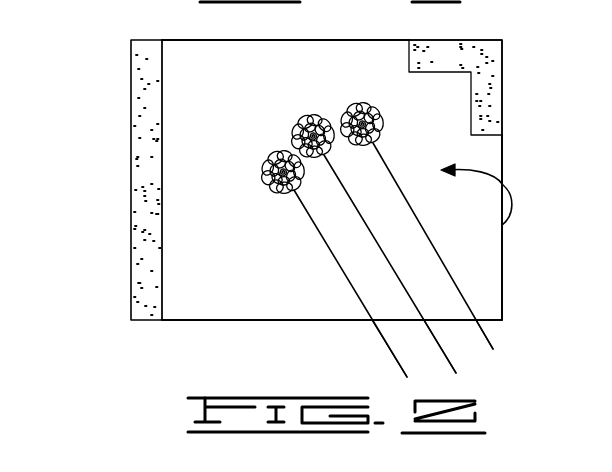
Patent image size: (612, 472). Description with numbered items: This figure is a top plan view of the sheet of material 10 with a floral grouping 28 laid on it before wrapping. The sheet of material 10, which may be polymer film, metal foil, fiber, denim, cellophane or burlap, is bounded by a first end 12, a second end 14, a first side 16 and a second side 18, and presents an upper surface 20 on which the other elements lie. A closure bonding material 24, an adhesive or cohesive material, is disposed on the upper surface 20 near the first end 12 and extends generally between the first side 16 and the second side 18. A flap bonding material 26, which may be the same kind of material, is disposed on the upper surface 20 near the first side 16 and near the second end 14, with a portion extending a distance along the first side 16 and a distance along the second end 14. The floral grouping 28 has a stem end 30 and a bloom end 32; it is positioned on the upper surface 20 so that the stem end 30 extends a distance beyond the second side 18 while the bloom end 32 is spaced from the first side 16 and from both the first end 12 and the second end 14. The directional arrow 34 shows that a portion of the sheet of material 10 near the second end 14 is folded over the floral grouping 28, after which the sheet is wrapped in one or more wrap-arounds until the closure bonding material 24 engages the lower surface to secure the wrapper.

The sheet of material 10 is at (321, 188).
The first end 12 is at (133, 167).
The second end 14 is at (503, 238).
The first side 16 is at (254, 40).
The second side 18 is at (287, 322).
The upper surface 20 is at (475, 283).
The closure bonding material 24 is at (145, 85).
The flap bonding material 26 is at (487, 60).
The floral grouping 28 is at (291, 208).
The stem end 30 is at (373, 338).
The bloom end 32 is at (265, 140).
The directional arrow 34 is at (480, 172).